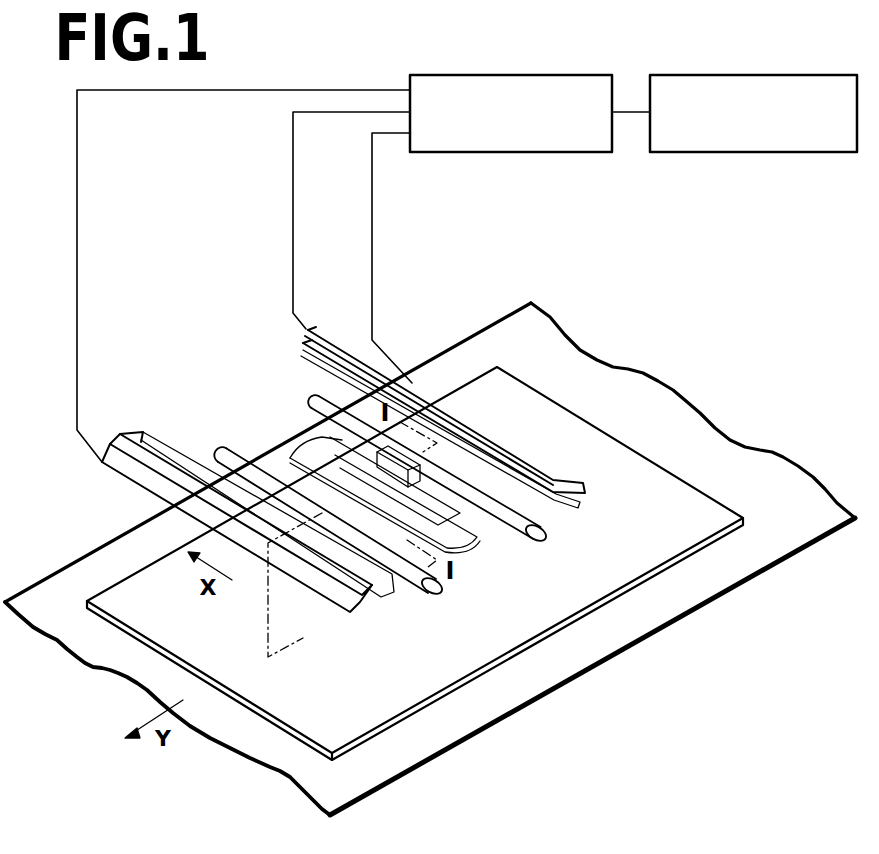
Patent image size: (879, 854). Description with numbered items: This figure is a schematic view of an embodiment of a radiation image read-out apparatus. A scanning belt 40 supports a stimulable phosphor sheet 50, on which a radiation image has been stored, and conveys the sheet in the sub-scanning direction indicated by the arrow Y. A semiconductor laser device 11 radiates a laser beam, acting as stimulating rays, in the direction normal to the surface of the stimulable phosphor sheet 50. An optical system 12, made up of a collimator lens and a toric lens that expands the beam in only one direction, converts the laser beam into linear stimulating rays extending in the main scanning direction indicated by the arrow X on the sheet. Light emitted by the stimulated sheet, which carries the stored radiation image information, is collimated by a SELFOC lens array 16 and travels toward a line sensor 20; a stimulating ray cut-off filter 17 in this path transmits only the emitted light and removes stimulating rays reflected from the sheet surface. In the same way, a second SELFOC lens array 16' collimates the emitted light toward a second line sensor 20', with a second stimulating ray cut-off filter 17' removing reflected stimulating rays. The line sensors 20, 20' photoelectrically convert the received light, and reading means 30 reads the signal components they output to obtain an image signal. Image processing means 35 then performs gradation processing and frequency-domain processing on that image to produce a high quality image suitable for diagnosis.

The semiconductor laser device 11 is at (427, 470).
The optical system 12 is at (477, 517).
The SELFOC lens array 16 is at (447, 500).
The SELFOC lens array 16' is at (351, 552).
The stimulating ray cut-off filter 17 is at (452, 455).
The stimulating ray cut-off filter 17' is at (288, 551).
The line sensor 20 is at (461, 410).
The line sensor 20' is at (237, 551).
The reading means 30 is at (500, 152).
The image processing means 35 is at (745, 152).
The scanning belt 40 is at (647, 390).
The stimulable phosphor sheet 50 is at (357, 720).